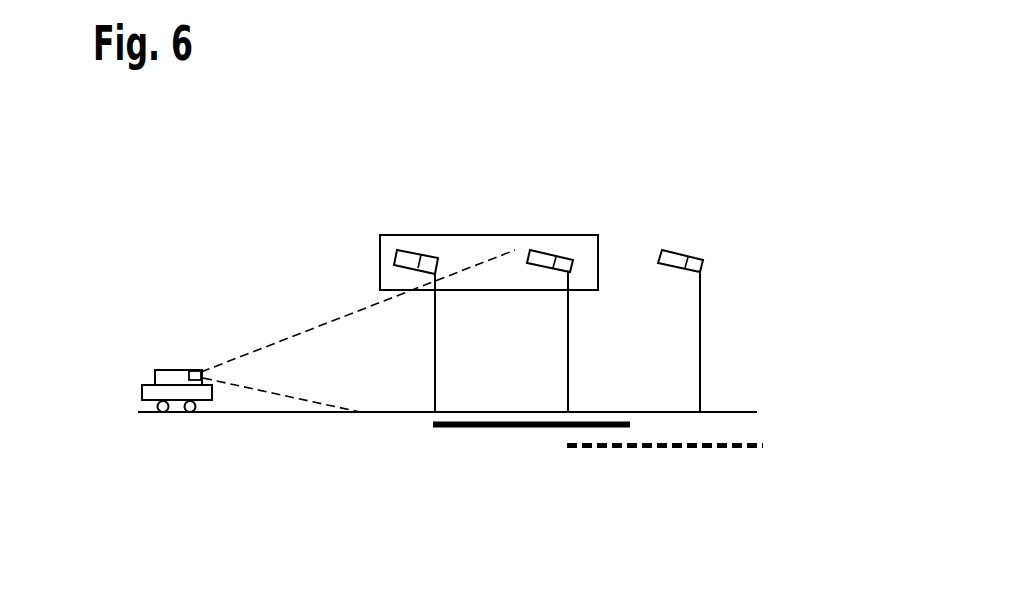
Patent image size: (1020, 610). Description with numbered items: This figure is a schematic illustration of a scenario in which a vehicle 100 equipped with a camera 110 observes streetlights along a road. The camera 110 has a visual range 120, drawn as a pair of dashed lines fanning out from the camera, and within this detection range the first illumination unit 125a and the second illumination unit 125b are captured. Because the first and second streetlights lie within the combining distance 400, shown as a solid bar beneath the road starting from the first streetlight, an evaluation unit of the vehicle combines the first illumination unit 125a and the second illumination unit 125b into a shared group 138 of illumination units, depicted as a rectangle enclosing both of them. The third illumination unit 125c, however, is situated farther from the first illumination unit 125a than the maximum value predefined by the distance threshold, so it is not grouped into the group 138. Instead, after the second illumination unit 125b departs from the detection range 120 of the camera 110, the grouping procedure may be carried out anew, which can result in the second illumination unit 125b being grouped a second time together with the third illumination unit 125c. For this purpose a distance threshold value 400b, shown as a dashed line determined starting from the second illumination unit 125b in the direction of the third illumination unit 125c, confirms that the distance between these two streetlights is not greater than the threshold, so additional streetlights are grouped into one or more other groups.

The vehicle 100 is at (148, 385).
The camera 110 is at (197, 370).
The visual range 120 is at (281, 352).
The group of illumination units 138 is at (394, 270).
The first illumination unit 125a is at (424, 255).
The second illumination unit 125b is at (556, 256).
The third illumination unit 125c is at (688, 256).
The combining distance 400 is at (545, 428).
The distance threshold value 400b is at (680, 450).